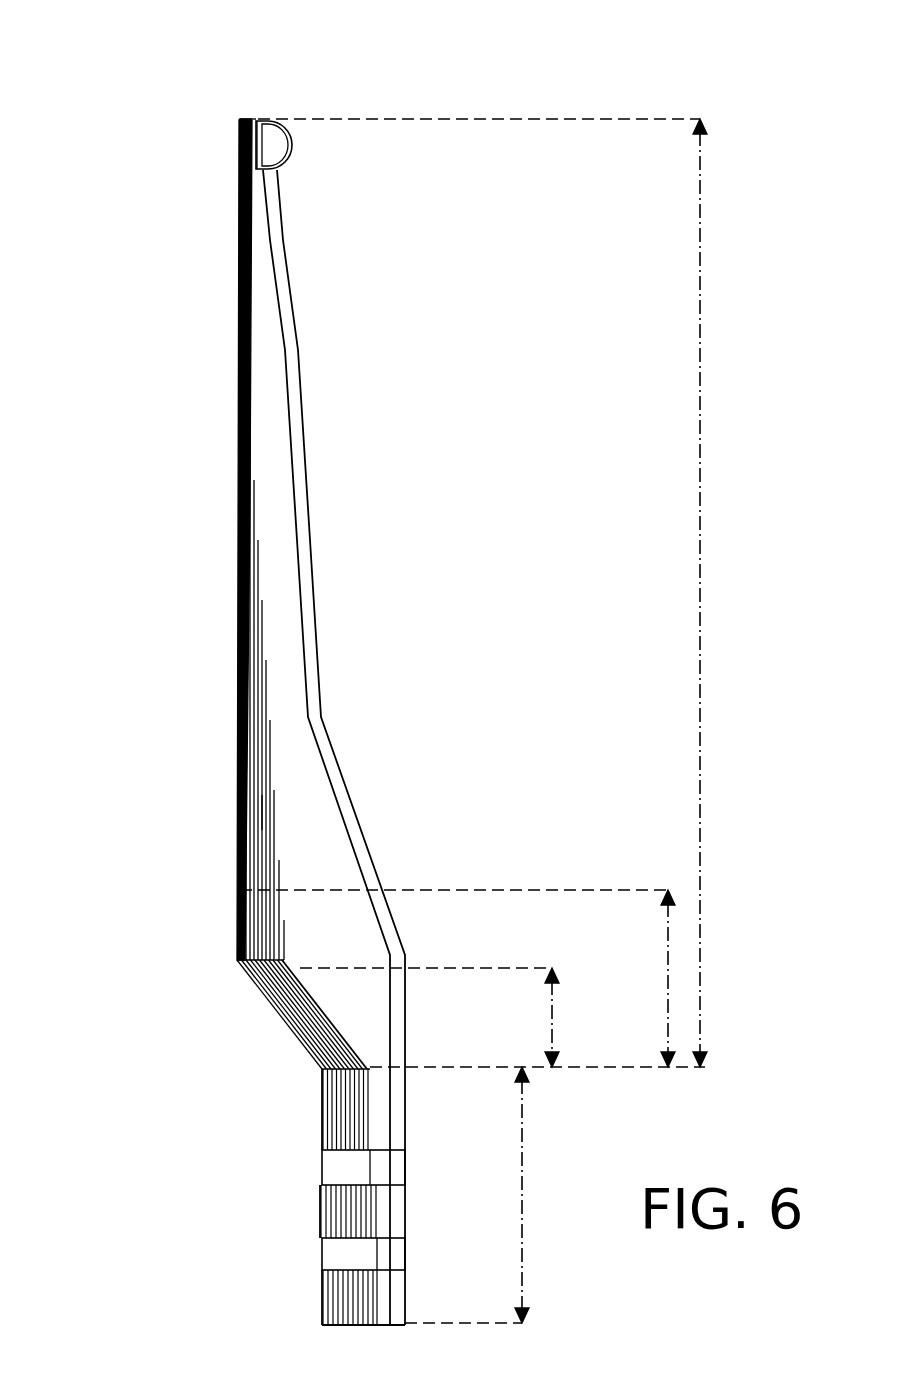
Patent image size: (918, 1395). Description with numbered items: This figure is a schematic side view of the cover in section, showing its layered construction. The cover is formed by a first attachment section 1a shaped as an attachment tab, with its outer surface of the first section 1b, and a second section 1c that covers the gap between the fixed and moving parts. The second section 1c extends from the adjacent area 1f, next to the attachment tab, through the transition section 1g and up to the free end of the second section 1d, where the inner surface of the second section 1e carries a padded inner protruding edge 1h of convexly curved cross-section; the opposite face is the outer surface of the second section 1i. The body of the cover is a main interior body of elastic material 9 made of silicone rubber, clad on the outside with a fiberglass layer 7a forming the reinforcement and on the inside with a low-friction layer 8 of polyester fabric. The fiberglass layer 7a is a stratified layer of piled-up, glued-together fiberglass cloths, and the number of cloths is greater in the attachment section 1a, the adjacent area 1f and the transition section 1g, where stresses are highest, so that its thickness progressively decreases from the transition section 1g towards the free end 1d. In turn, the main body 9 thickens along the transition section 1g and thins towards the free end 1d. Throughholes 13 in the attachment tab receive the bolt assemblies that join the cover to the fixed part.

The first attachment section 1a is at (545, 1195).
The outer surface of the first section 1b is at (308, 1115).
The second section 1c is at (720, 593).
The free end of the second section 1d is at (239, 119).
The inner surface of the second section 1e is at (315, 377).
The adjacent area of the second section to the first section 1f is at (650, 978).
The transition section 1g is at (573, 1017).
The inner protruding edge 1h is at (285, 148).
The outer surface of the second section 1i is at (226, 535).
The fiberglass layer 7a is at (270, 1007).
The low-friction layer 8 is at (345, 812).
The main interior body of elastic material 9 is at (290, 716).
The throughhole in the attachment section 13 is at (340, 1260).